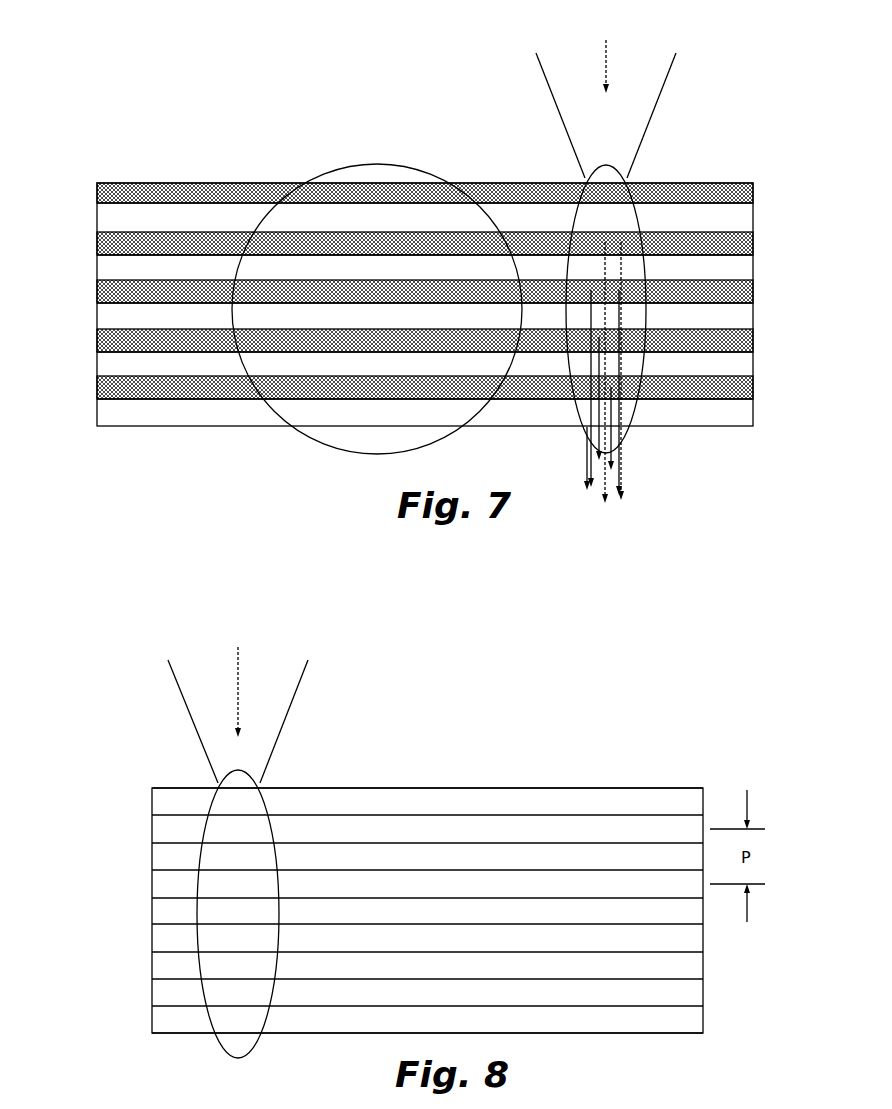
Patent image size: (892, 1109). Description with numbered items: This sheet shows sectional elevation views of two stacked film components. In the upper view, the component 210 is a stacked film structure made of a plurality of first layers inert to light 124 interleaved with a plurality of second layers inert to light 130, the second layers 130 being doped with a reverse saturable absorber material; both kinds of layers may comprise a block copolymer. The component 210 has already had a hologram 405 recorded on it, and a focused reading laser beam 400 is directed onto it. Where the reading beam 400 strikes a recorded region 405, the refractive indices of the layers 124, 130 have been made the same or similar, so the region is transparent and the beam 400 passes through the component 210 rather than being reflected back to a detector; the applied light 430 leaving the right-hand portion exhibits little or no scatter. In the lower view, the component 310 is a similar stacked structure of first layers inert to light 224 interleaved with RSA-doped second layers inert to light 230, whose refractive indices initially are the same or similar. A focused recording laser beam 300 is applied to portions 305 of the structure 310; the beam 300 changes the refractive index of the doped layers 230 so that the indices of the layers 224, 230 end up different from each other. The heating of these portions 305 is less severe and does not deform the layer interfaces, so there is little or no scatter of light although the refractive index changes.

In FIG. 7, the stacked component 210 is at (733, 75).
In FIG. 7, the second layers inert to light 130 is at (110, 197).
In FIG. 7, the first layers inert to light 124 is at (113, 222).
In FIG. 7, the focused reading laser beam 400 is at (606, 73).
In FIG. 7, the hologram 405 is at (443, 433).
In FIG. 7, the applied light 430 is at (622, 451).
In FIG. 8, the stacked component 310 is at (708, 770).
In FIG. 8, the second layers inert to light 230 is at (158, 802).
In FIG. 8, the first layers inert to light 224 is at (158, 830).
In FIG. 8, the focused recording laser beam 300 is at (238, 677).
In FIG. 8, the portions 305 is at (257, 1042).